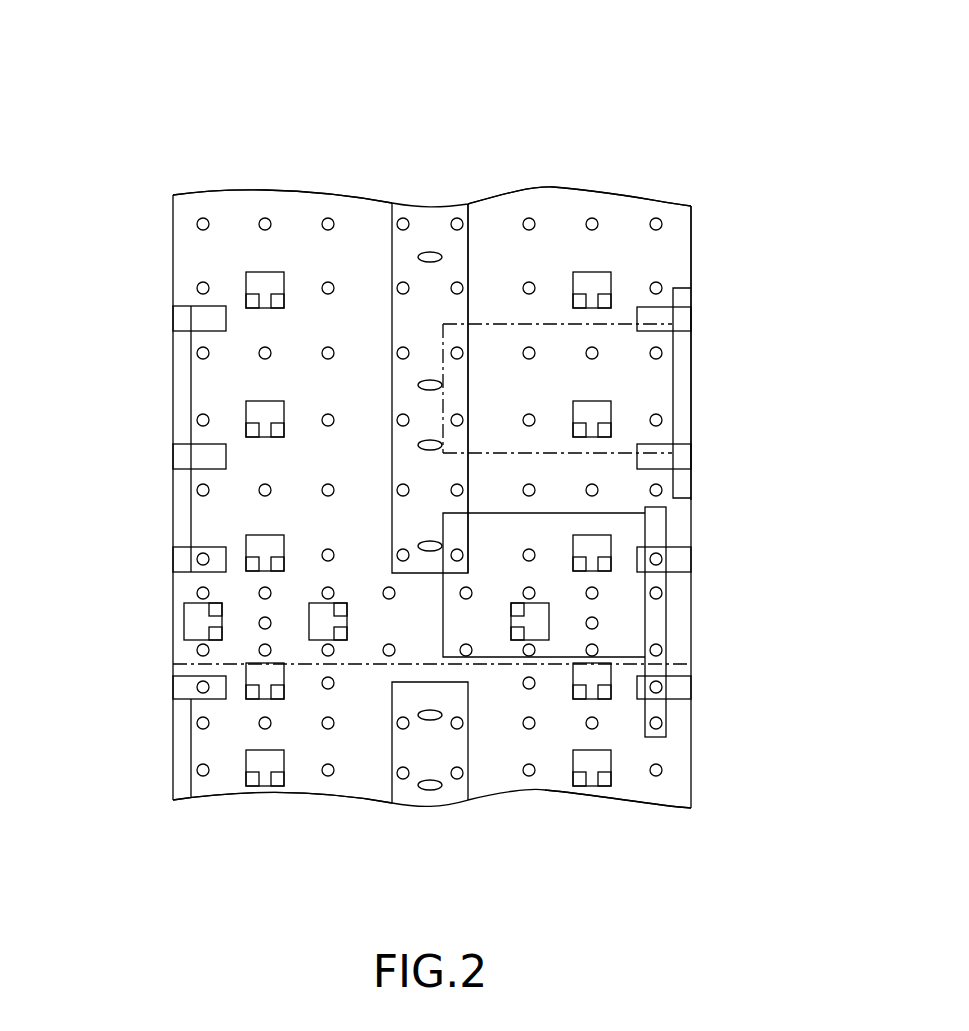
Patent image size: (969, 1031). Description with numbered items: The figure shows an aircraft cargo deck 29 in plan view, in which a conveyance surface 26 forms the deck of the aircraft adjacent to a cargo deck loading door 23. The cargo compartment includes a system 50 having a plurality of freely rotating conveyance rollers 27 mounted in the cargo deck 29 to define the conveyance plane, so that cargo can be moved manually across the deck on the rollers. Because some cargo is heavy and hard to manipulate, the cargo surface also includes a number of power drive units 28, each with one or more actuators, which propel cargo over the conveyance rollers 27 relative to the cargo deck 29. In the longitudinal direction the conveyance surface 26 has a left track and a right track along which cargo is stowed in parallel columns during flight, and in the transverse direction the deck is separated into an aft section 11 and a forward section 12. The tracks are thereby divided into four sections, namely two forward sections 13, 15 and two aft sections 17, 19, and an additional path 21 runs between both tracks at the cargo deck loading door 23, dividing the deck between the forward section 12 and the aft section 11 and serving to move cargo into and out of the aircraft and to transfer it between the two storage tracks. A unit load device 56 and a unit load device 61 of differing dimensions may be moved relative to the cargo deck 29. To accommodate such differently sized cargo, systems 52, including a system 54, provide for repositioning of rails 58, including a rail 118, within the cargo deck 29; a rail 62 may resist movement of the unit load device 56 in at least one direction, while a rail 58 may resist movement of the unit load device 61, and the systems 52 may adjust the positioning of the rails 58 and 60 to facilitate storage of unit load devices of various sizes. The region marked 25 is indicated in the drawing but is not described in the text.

The system 50 is at (335, 72).
The forward section 12 is at (143, 357).
The forward section 13 is at (337, 212).
The forward section 15 is at (675, 232).
The panel region 25 is at (780, 193).
The conveyance surface 26 is at (432, 230).
The aircraft cargo deck 29 is at (463, 207).
The systems 52 is at (182, 300).
The system 54 is at (170, 462).
The rail 118 is at (178, 395).
The rail 60 is at (683, 355).
The rail 62 is at (695, 403).
The rails 58 is at (672, 523).
The unit load device 61 is at (466, 562).
The unit load device 56 is at (538, 372).
The aft section 17 is at (355, 772).
The aft section 19 is at (657, 790).
The aft section 11 is at (165, 762).
The additional path 21 is at (427, 640).
The conveyance rollers 27 is at (334, 420).
The power drive unit 28 is at (285, 550).
The cargo deck loading door 23 is at (160, 575).